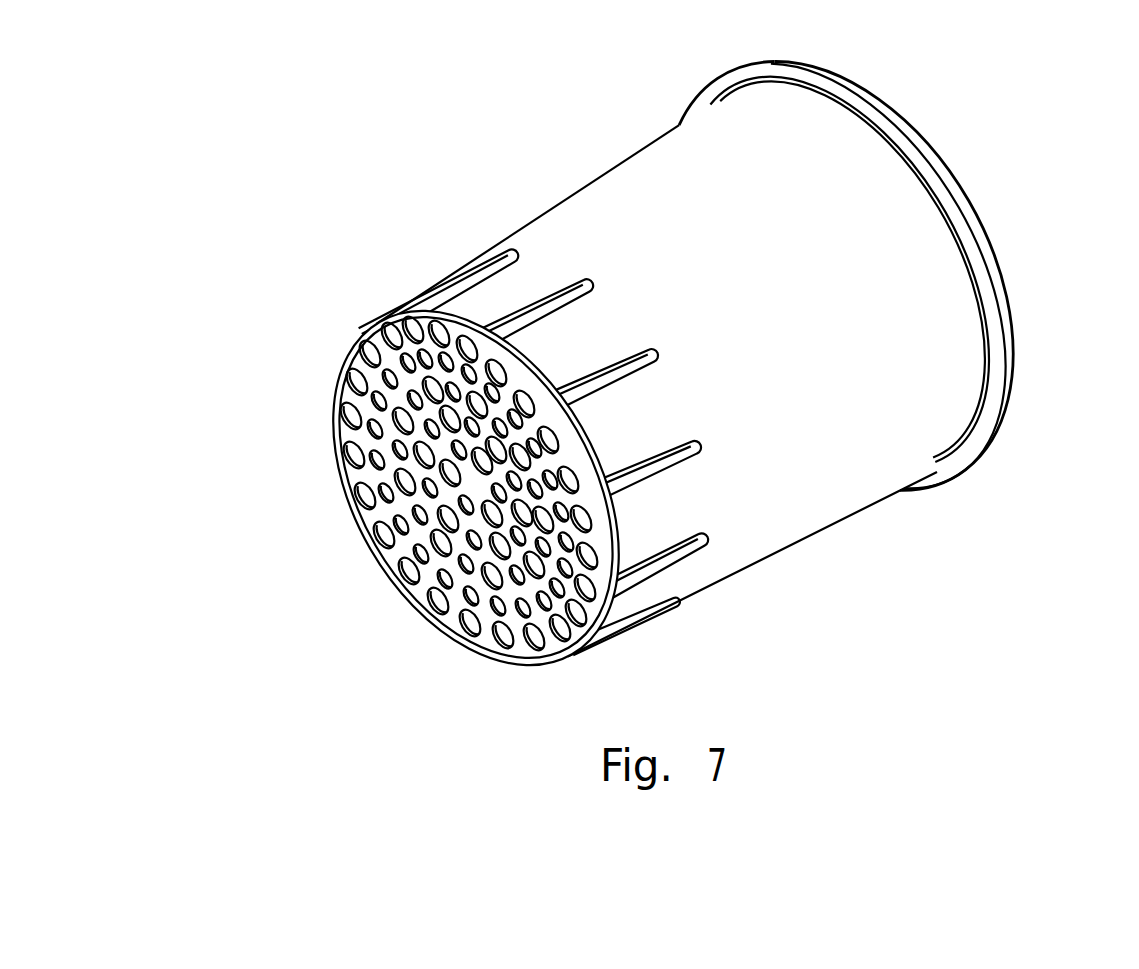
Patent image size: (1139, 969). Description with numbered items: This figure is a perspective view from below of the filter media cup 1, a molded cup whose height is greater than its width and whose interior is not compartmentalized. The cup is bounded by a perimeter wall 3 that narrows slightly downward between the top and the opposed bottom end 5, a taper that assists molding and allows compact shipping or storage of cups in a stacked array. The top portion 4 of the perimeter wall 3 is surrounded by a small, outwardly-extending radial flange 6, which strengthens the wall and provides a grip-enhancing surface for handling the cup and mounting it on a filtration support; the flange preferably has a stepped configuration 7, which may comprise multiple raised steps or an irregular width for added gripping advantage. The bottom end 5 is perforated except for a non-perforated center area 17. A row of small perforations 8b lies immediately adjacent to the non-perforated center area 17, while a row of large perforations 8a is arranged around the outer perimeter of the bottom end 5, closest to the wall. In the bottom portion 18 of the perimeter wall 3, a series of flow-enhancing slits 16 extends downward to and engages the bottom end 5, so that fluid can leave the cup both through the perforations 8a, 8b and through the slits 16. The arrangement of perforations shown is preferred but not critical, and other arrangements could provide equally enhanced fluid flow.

The filter media cup 1 is at (218, 135).
The perimeter wall 3 is at (814, 549).
The top portion of perimeter wall 4 is at (669, 114).
The bottom end 5 is at (339, 348).
The radial flange 6 is at (905, 142).
The stepped configuration 7 is at (1007, 261).
The large perforations 8a is at (430, 613).
The small perforations 8b is at (365, 517).
The slits 16 is at (479, 252).
The non-perforated center area 17 is at (466, 490).
The bottom portion of perimeter wall 18 is at (690, 570).